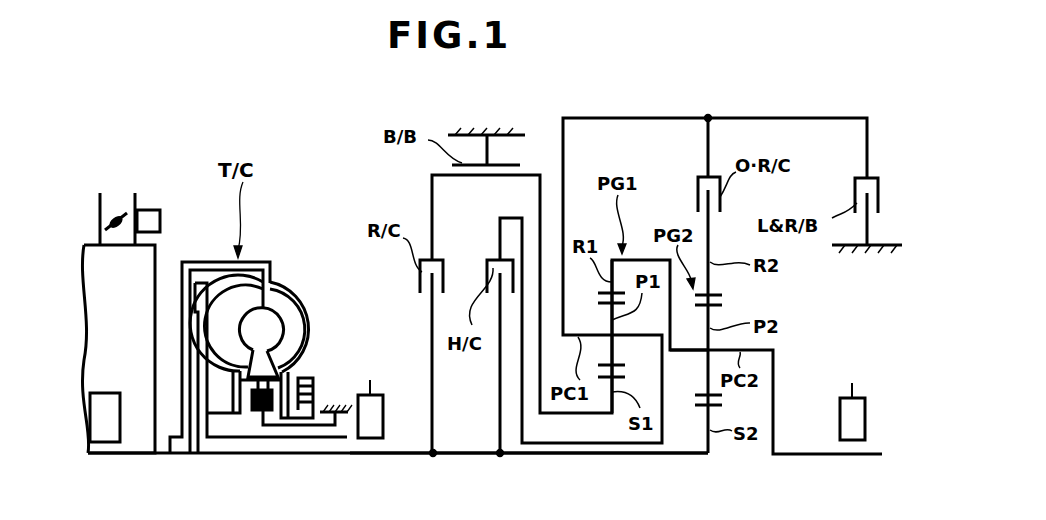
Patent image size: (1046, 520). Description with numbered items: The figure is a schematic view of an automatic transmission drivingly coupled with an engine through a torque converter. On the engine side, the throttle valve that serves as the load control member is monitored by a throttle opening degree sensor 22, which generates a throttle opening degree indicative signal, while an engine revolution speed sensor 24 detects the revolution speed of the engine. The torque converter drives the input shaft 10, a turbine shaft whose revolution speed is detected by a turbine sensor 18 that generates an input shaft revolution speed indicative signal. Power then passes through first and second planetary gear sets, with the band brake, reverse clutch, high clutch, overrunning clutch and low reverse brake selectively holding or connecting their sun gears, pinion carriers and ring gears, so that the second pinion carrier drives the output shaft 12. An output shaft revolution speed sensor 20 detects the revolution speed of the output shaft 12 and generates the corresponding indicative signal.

The input shaft 10 is at (412, 455).
The output shaft 12 is at (780, 457).
The turbine sensor 18 is at (375, 400).
The output shaft revolution speed sensor 20 is at (845, 408).
The throttle opening degree sensor 22 is at (160, 222).
The engine revolution speed sensor 24 is at (124, 402).